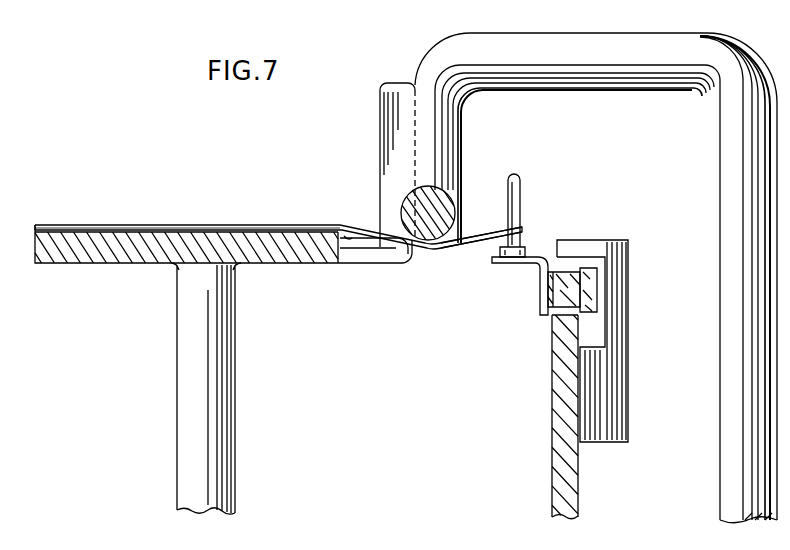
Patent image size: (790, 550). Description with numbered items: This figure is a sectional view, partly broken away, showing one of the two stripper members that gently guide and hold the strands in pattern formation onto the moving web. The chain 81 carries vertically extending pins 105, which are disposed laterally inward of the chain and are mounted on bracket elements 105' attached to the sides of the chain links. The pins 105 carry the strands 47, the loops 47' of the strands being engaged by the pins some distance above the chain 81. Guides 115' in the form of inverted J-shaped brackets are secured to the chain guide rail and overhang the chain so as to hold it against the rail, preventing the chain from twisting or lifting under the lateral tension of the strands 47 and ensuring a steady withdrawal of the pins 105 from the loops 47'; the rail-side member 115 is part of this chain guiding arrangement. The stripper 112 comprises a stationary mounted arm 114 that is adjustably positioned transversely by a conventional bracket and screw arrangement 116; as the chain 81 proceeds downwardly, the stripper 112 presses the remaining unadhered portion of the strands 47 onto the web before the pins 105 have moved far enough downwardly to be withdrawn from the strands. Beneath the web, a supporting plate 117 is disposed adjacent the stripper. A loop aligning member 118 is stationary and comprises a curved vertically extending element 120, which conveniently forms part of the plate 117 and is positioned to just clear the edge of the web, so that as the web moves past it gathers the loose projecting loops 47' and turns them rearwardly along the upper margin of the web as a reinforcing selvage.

The stationary mounted arm 114 is at (607, 74).
The supporting plate 117 is at (116, 258).
The bracket and screw arrangement 116 is at (136, 233).
The loop aligning member 118 is at (348, 233).
The strands 47 is at (278, 211).
The loops of strands 47' is at (481, 219).
The curved vertically extending element 120 is at (390, 256).
The stripper 112 is at (431, 243).
The pins 105 is at (532, 206).
The bracket elements 105' is at (514, 286).
The chain 81 is at (561, 284).
The upright member 115 is at (544, 417).
The guides 115' is at (596, 323).